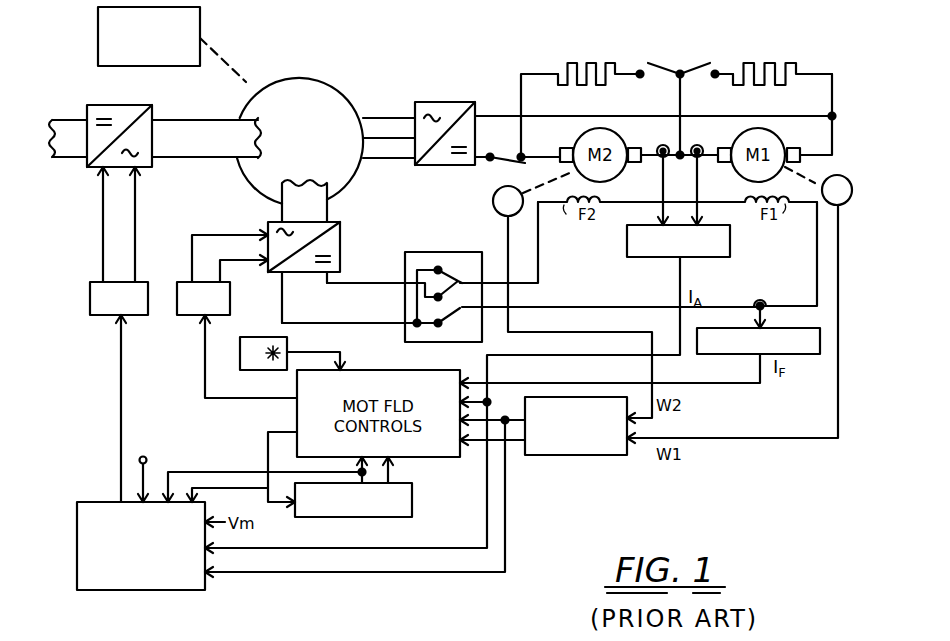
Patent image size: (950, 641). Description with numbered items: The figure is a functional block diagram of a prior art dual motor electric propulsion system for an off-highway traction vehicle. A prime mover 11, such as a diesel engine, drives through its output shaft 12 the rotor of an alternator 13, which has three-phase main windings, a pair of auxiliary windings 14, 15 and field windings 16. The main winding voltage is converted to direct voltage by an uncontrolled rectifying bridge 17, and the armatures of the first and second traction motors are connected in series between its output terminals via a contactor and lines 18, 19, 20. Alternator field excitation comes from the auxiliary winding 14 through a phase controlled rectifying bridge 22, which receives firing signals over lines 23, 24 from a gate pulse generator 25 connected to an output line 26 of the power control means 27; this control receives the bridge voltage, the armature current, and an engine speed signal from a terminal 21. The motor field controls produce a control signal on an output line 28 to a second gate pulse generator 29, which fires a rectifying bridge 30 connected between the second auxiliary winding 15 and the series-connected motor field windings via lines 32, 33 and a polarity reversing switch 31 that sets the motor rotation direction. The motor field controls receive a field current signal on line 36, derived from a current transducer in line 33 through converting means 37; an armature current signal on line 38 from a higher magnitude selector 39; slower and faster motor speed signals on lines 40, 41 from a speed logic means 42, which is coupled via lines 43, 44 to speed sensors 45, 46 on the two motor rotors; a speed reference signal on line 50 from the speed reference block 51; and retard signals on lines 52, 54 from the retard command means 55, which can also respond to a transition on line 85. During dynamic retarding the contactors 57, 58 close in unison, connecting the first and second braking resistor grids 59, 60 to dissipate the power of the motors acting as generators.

The prime mover 11 is at (200, 18).
The output shaft 12 is at (228, 63).
The alternating current generator 13 is at (318, 76).
The auxiliary winding 14 is at (263, 132).
The auxiliary winding 15 is at (305, 180).
The field windings 16 is at (40, 138).
The rectifying bridge 17 is at (428, 101).
The line 18 is at (510, 112).
The line 19 is at (536, 153).
The line 20 is at (690, 160).
The terminal 21 is at (147, 457).
The rectifying bridge 22 is at (118, 106).
The line 23 is at (102, 198).
The line 24 is at (137, 198).
The gate pulse generator 25 is at (92, 283).
The output line 26 is at (120, 382).
The power control means 27 is at (100, 500).
The output line 28 is at (205, 373).
The gate pulse generator 29 is at (187, 282).
The rectifying bridge 30 is at (343, 226).
The polarity reversing switch 31 is at (462, 251).
The line 32 is at (540, 259).
The line 33 is at (816, 293).
The input line 36 is at (703, 386).
The converting means 37 is at (813, 358).
The input line 38 is at (678, 300).
The higher magnitude selector 39 is at (730, 255).
The input line 40 is at (514, 445).
The input line 41 is at (521, 414).
The speed logic means 42 is at (597, 457).
The line 43 is at (828, 441).
The line 44 is at (510, 299).
The speed sensor 45 is at (846, 172).
The speed sensor 46 is at (493, 194).
The input line 50 is at (323, 352).
The speed reference means 51 is at (277, 337).
The input line 52 is at (372, 477).
The input line 54 is at (394, 470).
The retard command means 55 is at (414, 511).
The contactor 57 is at (697, 62).
The contactor 58 is at (666, 70).
The braking resistor grid 59 is at (770, 62).
The braking resistor grid 60 is at (592, 63).
The line 85 is at (266, 452).